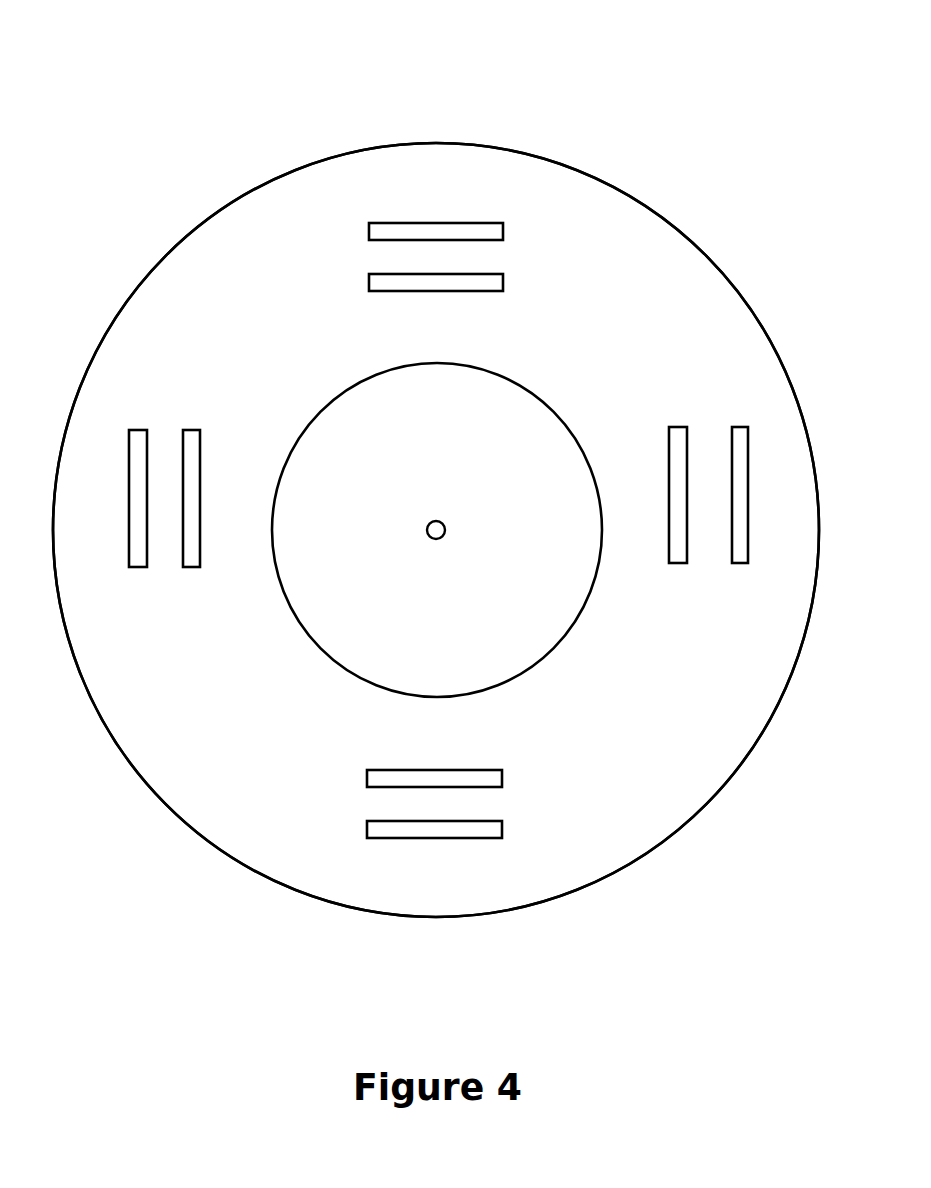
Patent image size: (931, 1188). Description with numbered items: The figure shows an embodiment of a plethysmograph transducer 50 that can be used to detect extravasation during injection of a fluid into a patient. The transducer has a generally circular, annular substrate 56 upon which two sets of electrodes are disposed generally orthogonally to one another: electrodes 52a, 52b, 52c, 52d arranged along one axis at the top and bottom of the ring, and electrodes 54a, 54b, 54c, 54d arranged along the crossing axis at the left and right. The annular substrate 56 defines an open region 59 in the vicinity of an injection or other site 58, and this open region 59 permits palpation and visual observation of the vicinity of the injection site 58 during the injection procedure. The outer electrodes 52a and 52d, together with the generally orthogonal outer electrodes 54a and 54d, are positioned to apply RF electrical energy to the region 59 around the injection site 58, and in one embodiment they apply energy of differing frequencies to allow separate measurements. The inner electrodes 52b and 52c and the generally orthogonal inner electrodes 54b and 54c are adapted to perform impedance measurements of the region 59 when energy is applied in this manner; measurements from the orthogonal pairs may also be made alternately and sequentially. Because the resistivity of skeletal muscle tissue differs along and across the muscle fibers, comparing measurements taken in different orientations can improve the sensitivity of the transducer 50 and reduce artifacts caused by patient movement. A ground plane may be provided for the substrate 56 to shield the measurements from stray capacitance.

The plethysmograph transducer 50 is at (204, 166).
The electrode 52a is at (432, 223).
The electrode 52b is at (440, 291).
The electrode 52c is at (478, 770).
The electrode 52d is at (435, 838).
The electrode 54a is at (129, 468).
The electrode 54b is at (200, 453).
The electrode 54c is at (669, 458).
The electrode 54d is at (748, 445).
The annular substrate 56 is at (183, 758).
The injection site 58 is at (435, 517).
The open region 59 is at (522, 608).